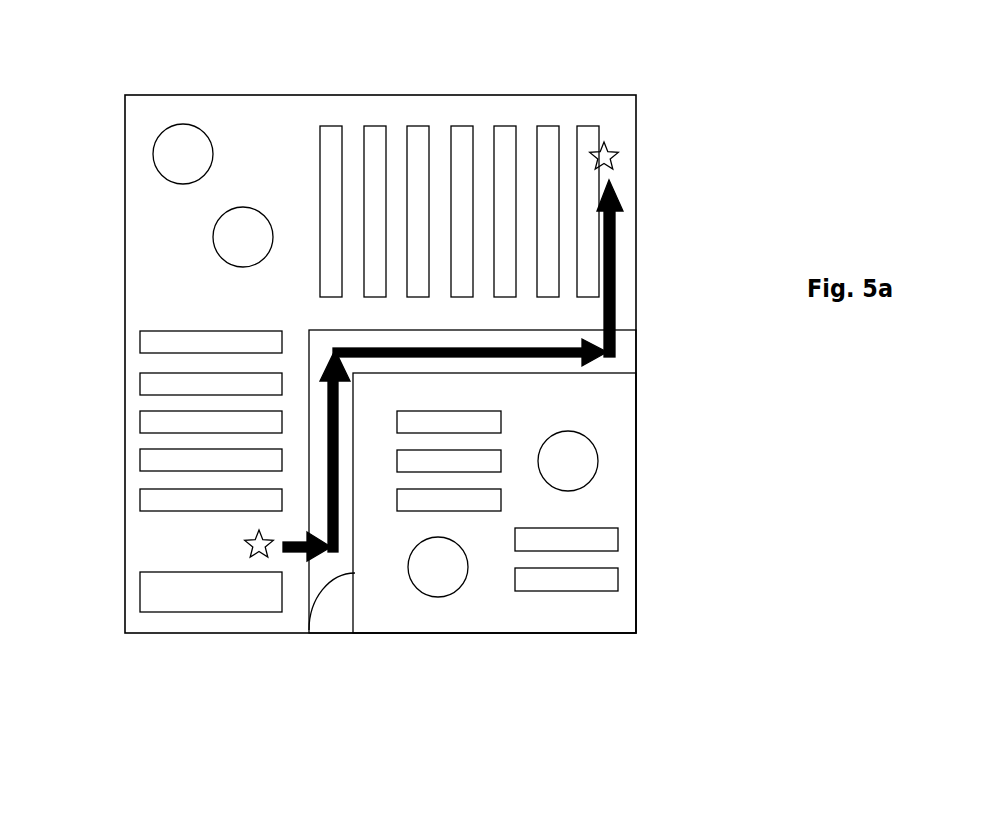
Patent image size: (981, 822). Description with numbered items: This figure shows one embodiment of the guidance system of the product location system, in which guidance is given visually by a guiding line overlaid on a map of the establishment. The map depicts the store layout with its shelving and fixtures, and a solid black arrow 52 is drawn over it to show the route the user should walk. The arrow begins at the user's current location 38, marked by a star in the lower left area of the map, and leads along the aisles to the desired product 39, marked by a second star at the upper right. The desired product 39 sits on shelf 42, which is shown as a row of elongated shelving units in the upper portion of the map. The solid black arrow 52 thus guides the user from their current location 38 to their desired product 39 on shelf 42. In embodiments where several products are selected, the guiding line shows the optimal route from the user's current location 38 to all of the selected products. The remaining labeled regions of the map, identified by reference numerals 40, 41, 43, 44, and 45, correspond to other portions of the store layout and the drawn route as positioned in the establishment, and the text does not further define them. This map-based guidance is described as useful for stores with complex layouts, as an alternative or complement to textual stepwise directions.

The current location 38 is at (228, 542).
The desired product 39 is at (632, 156).
The inner region 40 is at (336, 561).
The intermediate region 41 is at (336, 620).
The shelf 42 is at (589, 110).
The outer region 43 is at (120, 341).
The path segment 44 is at (316, 352).
The path segment end 45 is at (632, 353).
The solid black arrow 52 is at (567, 370).